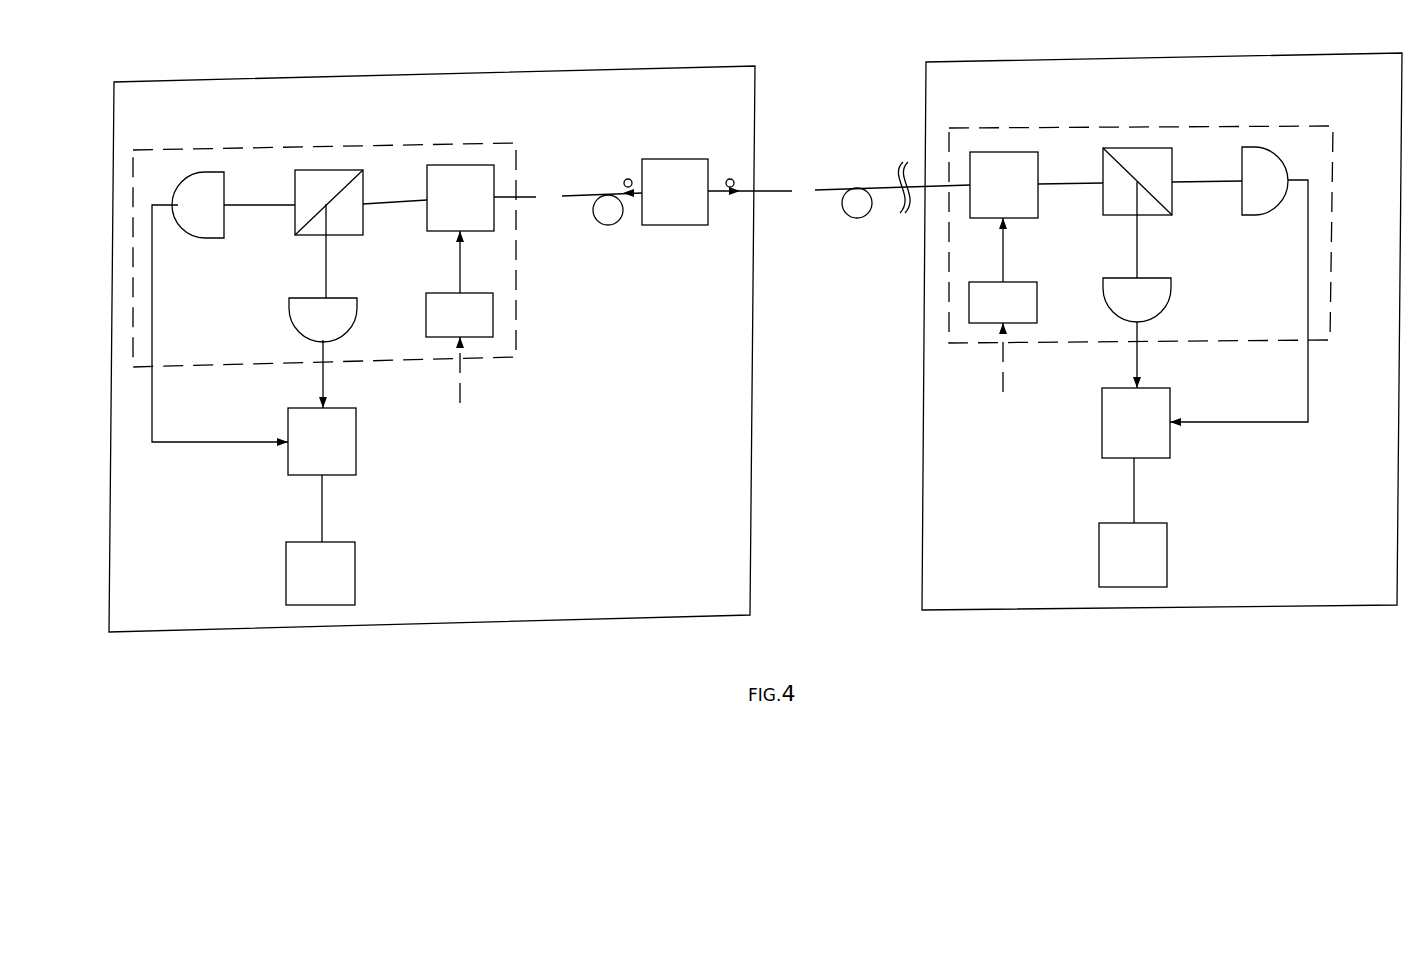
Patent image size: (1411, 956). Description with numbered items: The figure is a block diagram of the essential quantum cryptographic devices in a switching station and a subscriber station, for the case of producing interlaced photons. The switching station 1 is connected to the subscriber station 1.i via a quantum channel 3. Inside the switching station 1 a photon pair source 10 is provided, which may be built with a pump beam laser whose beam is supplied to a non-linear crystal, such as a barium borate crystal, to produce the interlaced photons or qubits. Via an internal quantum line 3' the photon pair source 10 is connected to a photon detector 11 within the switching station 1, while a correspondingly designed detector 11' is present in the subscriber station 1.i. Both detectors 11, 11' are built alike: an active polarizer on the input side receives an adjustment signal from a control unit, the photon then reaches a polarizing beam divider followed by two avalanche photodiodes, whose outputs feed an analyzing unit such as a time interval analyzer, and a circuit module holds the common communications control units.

The switching station 1 is at (435, 337).
The subscriber station 1.i is at (1162, 321).
The quantum channel 3 is at (839, 190).
The internal quantum line 3' is at (568, 202).
The photon pair source 10 is at (675, 192).
The photon detector 11 is at (330, 242).
The detector 11' is at (1149, 224).